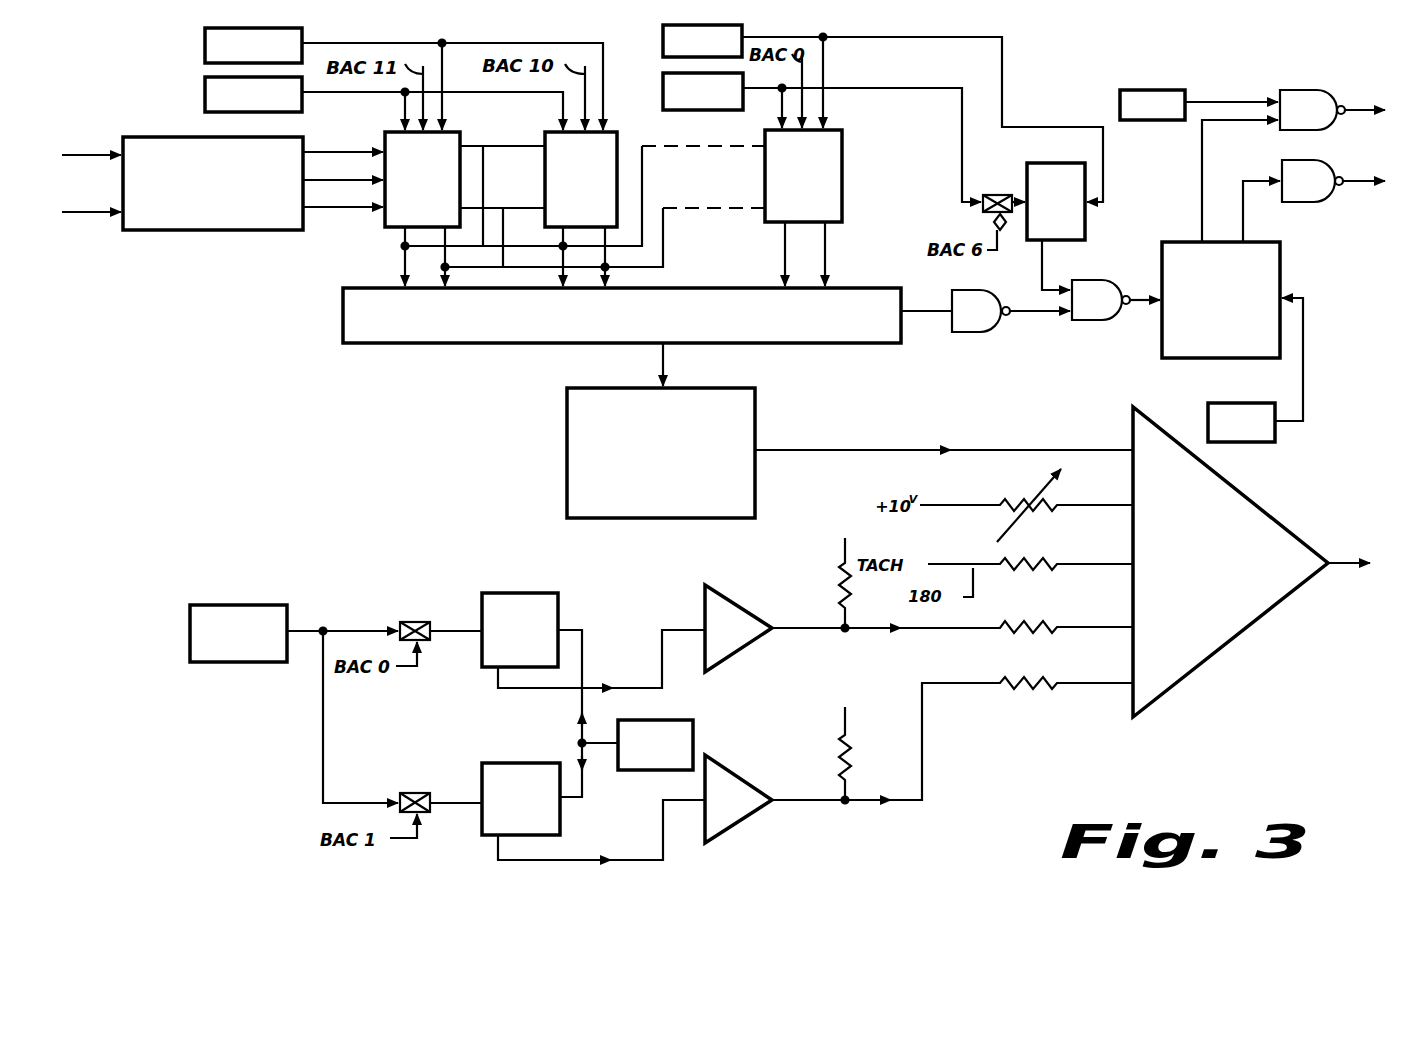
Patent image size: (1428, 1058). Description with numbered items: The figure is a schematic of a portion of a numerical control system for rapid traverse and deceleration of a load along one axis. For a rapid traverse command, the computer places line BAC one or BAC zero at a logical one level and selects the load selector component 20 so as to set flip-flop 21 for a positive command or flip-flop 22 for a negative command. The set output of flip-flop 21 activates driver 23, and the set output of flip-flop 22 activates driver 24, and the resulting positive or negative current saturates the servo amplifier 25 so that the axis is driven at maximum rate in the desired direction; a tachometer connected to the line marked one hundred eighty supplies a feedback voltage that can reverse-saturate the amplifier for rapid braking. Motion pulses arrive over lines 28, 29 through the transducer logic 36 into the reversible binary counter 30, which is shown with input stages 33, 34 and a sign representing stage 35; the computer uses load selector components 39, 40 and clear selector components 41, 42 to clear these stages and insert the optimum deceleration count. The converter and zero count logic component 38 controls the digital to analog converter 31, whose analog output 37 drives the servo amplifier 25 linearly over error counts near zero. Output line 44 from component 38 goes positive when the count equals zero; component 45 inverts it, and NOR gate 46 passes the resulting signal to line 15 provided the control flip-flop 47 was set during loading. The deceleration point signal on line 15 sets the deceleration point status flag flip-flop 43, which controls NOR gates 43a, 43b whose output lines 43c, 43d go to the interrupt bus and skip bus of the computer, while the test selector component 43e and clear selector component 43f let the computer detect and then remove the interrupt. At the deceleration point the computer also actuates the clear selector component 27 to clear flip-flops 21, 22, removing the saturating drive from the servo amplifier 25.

The deceleration point signal line 15 is at (1137, 302).
The load selector component 20 is at (250, 605).
The flip-flop 21 is at (520, 763).
The flip-flop 22 is at (540, 593).
The driver 23 is at (740, 780).
The driver 24 is at (740, 606).
The servo amplifier 25 is at (1272, 512).
The clear selector component 27 is at (693, 724).
The line 28 is at (88, 153).
The line 29 is at (97, 214).
The reversible binary counter 30 is at (847, 196).
The digital to analog converter 31 is at (567, 455).
The input stage 33 is at (462, 135).
The input stage 34 is at (618, 133).
The sign representing stage 35 is at (843, 131).
The transducer logic 36 is at (218, 230).
The output 37 is at (920, 450).
The converter and zero count logic component 38 is at (477, 343).
The load selector component 39 is at (205, 88).
The load selector component 40 is at (663, 78).
The clear selector component 41 is at (205, 40).
The clear selector component 42 is at (742, 28).
The deceleration point status flag flip-flop 43 is at (1280, 266).
The NOR gate 43a is at (1300, 203).
The NOR gate 43b is at (1300, 90).
The output line 43c is at (1350, 180).
The output line 43d is at (1355, 109).
The test selector component 43e is at (1160, 90).
The clear selector component 43f is at (1208, 421).
The output line 44 is at (935, 312).
The inverter component 45 is at (980, 332).
The NOR gate 46 is at (1090, 320).
The control flip-flop 47 is at (1085, 233).